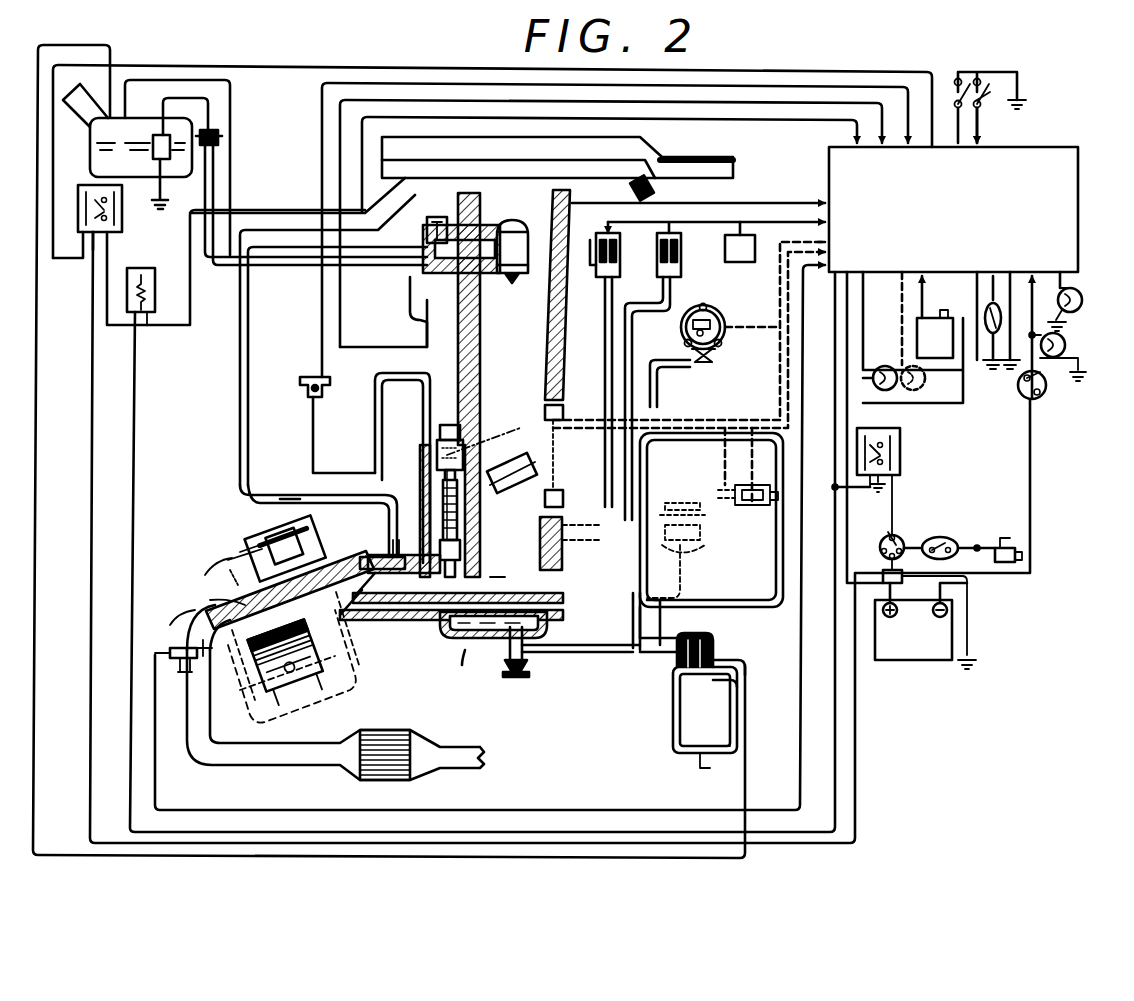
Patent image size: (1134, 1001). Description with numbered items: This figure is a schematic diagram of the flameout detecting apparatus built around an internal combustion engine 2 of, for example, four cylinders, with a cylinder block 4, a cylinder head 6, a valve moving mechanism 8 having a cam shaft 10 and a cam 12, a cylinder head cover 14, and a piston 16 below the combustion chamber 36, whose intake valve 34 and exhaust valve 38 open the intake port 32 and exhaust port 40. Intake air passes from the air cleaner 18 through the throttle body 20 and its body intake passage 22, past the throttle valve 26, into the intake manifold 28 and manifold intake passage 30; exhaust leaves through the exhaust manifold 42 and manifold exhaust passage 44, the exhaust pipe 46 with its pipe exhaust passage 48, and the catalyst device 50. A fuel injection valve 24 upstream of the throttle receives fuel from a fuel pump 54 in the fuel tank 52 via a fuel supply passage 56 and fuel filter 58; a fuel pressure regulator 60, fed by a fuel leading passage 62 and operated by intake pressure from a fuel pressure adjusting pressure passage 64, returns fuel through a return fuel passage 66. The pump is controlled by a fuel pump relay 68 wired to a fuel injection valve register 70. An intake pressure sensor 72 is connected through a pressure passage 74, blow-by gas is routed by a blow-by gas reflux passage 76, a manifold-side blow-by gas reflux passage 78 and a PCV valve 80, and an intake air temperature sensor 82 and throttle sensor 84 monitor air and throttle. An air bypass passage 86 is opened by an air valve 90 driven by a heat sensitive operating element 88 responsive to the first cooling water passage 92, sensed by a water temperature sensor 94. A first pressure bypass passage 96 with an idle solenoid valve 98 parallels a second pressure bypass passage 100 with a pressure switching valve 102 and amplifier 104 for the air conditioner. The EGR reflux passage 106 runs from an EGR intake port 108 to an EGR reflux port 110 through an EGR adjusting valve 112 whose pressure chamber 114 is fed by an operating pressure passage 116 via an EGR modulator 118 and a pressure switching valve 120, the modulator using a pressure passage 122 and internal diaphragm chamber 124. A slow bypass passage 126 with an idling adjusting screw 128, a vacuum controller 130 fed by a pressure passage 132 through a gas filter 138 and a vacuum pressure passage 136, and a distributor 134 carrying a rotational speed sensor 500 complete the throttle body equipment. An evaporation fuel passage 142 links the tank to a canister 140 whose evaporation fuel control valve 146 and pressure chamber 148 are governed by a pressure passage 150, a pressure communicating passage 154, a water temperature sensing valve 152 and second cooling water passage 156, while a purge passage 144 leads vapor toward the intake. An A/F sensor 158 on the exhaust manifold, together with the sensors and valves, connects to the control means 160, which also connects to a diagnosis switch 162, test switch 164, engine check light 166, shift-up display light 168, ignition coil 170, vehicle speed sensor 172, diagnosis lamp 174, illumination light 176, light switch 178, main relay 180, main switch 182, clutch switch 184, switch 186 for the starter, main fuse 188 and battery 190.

The internal combustion engine 2 is at (307, 634).
The cylinder block 4 is at (323, 651).
The cylinder head 6 is at (225, 555).
The valve moving mechanism 8 is at (287, 542).
The cam shaft 10 is at (246, 535).
The cam 12 is at (272, 536).
The cylinder head cover 14 is at (228, 540).
The piston 16 is at (250, 680).
The air cleaner 18 is at (660, 150).
The throttle body 20 is at (457, 297).
The body intake passage 22 is at (499, 355).
The fuel injection valve 24 is at (512, 235).
The throttle valve 26 is at (470, 465).
The intake manifold 28 is at (405, 625).
The manifold intake passage 30 is at (505, 582).
The intake port 32 is at (320, 633).
The intake valve 34 is at (310, 580).
The combustion chamber 36 is at (340, 652).
The exhaust valve 38 is at (238, 584).
The exhaust port 40 is at (238, 612).
The exhaust manifold 42 is at (200, 612).
The manifold exhaust passage 44 is at (185, 635).
The exhaust pipe 46 is at (310, 735).
The pipe exhaust passage 48 is at (270, 752).
The catalyst device 50 is at (395, 728).
The fuel tank 52 is at (85, 152).
The fuel pump 54 is at (158, 175).
The fuel supply passage 56 is at (220, 268).
The fuel filter 58 is at (207, 150).
The fuel pressure regulator 60 is at (427, 222).
The fuel leading passage 62 is at (505, 273).
The fuel pressure adjusting pressure passage 64 is at (410, 290).
The return fuel passage 66 is at (232, 165).
The fuel pump relay 68 is at (72, 200).
The fuel injection valve register 70 is at (150, 290).
The intake pressure sensor 72 is at (303, 378).
The pressure passage 74 is at (312, 418).
The blow-by gas reflux passage 76 is at (238, 415).
The blow-by gas reflux passage on the manifold side 78 is at (283, 495).
The PCV valve 80 is at (425, 497).
The intake air temperature sensor 82 is at (655, 191).
The throttle sensor 84 is at (512, 452).
The air bypass passage 86 is at (455, 510).
The heat sensitive operating element 88 is at (440, 470).
The air valve 90 is at (450, 560).
The first cooling water passage 92 is at (440, 445).
The water temperature sensor 94 is at (440, 428).
The first pressure bypass passage 96 is at (605, 318).
The solenoid valve 98 is at (620, 268).
The second pressure bypass passage 100 is at (632, 345).
The pressure switching valve for air conditioner 102 is at (680, 270).
The amplifier for air conditioner 104 is at (755, 260).
The EGR reflux passage 106 is at (470, 630).
The EGR intake port 108 is at (200, 640).
The EGR reflux port 110 is at (538, 640).
The EGR adjusting valve 112 is at (560, 523).
The pressure chamber 114 is at (552, 540).
The operating pressure passage 116 is at (716, 428).
The EGR modulator 118 is at (675, 505).
The pressure switching valve for EGR control 120 is at (755, 505).
The pressure passage 122 is at (685, 585).
The internal diaphragm chamber 124 is at (700, 553).
The slow bypass passage 126 is at (557, 415).
The idling adjusting screw 128 is at (560, 503).
The vacuum controller 130 is at (713, 358).
The pressure passage 132 is at (375, 437).
The distributor 134 is at (723, 318).
The vacuum pressure passage 136 is at (657, 400).
The gas filter 138 is at (368, 557).
The canister 140 is at (672, 733).
The evaporation fuel passage 142 is at (35, 478).
The purge passage 144 is at (633, 620).
The evaporation fuel control valve 146 is at (730, 660).
The pressure chamber 148 is at (708, 650).
The pressure passage for control 150 is at (768, 605).
The water temperature sensing valve 152 is at (508, 675).
The pressure communicating passage 154 is at (590, 654).
The second cooling water passage 156 is at (468, 650).
The A/F sensor 158 is at (170, 652).
The control means (ECU) 160 is at (858, 256).
The diagnosis switch 162 is at (958, 78).
The test switch 164 is at (982, 105).
The engine check light 166 is at (880, 366).
The shift-up display light 168 is at (918, 395).
The ignition coil 170 is at (930, 335).
The vehicle speed sensor 172 is at (1002, 362).
The diagnosis lamp 174 is at (1082, 298).
The illumination light 176 is at (1066, 345).
The light switch 178 is at (1044, 395).
The main relay 180 is at (900, 455).
The main switch 182 is at (905, 540).
The clutch switch 184 is at (950, 543).
The switch for starter 186 is at (1005, 548).
The main fuse 188 is at (965, 576).
The battery 190 is at (928, 655).
The rotational speed sensor 500 is at (725, 327).